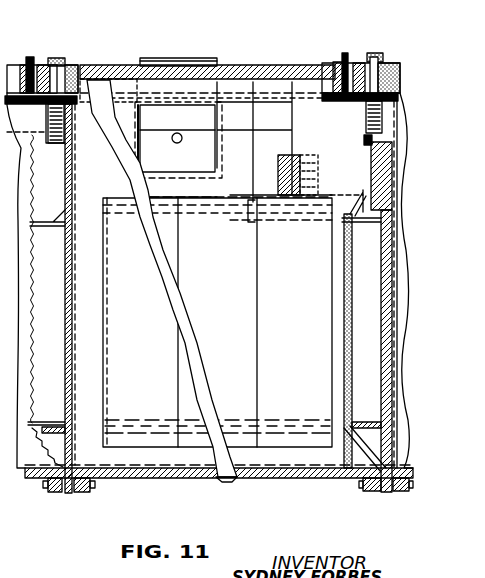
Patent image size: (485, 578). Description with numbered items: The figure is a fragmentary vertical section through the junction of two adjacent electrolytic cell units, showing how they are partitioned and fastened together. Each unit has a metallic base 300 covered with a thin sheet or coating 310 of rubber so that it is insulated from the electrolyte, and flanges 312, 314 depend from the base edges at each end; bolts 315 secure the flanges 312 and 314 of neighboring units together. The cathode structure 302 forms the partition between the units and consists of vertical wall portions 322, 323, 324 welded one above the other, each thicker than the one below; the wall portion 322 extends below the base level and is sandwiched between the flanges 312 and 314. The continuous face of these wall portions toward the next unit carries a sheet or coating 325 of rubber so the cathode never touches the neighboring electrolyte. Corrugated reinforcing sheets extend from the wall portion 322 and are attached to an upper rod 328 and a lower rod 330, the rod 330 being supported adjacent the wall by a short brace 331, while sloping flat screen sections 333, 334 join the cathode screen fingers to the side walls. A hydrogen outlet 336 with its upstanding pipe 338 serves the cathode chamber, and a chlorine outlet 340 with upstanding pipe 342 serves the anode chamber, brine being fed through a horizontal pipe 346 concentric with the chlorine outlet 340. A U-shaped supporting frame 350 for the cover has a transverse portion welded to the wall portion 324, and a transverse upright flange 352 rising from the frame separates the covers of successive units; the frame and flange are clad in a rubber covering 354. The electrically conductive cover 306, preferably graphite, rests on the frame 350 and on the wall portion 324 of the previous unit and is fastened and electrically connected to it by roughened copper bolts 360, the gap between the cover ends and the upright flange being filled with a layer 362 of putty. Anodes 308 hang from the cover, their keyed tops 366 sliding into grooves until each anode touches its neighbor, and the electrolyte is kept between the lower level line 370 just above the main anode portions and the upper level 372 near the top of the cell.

The metallic base 300 is at (227, 489).
The cathode structure 302 is at (364, 306).
The electrically conductive cover 306 is at (238, 65).
The anodes 308 is at (103, 264).
The sheet or coating 310 is at (153, 478).
The flange 312 is at (91, 482).
The flange 314 is at (362, 486).
The bolts 315 is at (52, 493).
The wall portion 322 is at (383, 342).
The wall portion 323 is at (380, 163).
The wall portion 324 is at (365, 140).
The sheet or coating 325 is at (388, 268).
The rod 328 is at (363, 226).
The rod 330 is at (362, 420).
The brace 331 is at (346, 428).
The sloping flat screen section 333 is at (362, 203).
The sloping flat screen section 334 is at (357, 452).
The hydrogen outlet 336 is at (280, 223).
The upstanding pipe 338 is at (280, 165).
The chlorine outlet 340 is at (142, 160).
The upstanding pipe 342 is at (178, 58).
The horizontal pipe 346 is at (183, 137).
The supporting frame 350 is at (352, 101).
The transverse upright flange 352 is at (348, 60).
The covering 354 is at (327, 101).
The bolts 360 is at (60, 60).
The layer of putty 362 is at (34, 66).
The tops 366 is at (115, 90).
The liquid level line 370 is at (140, 193).
The liquid level 372 is at (175, 133).